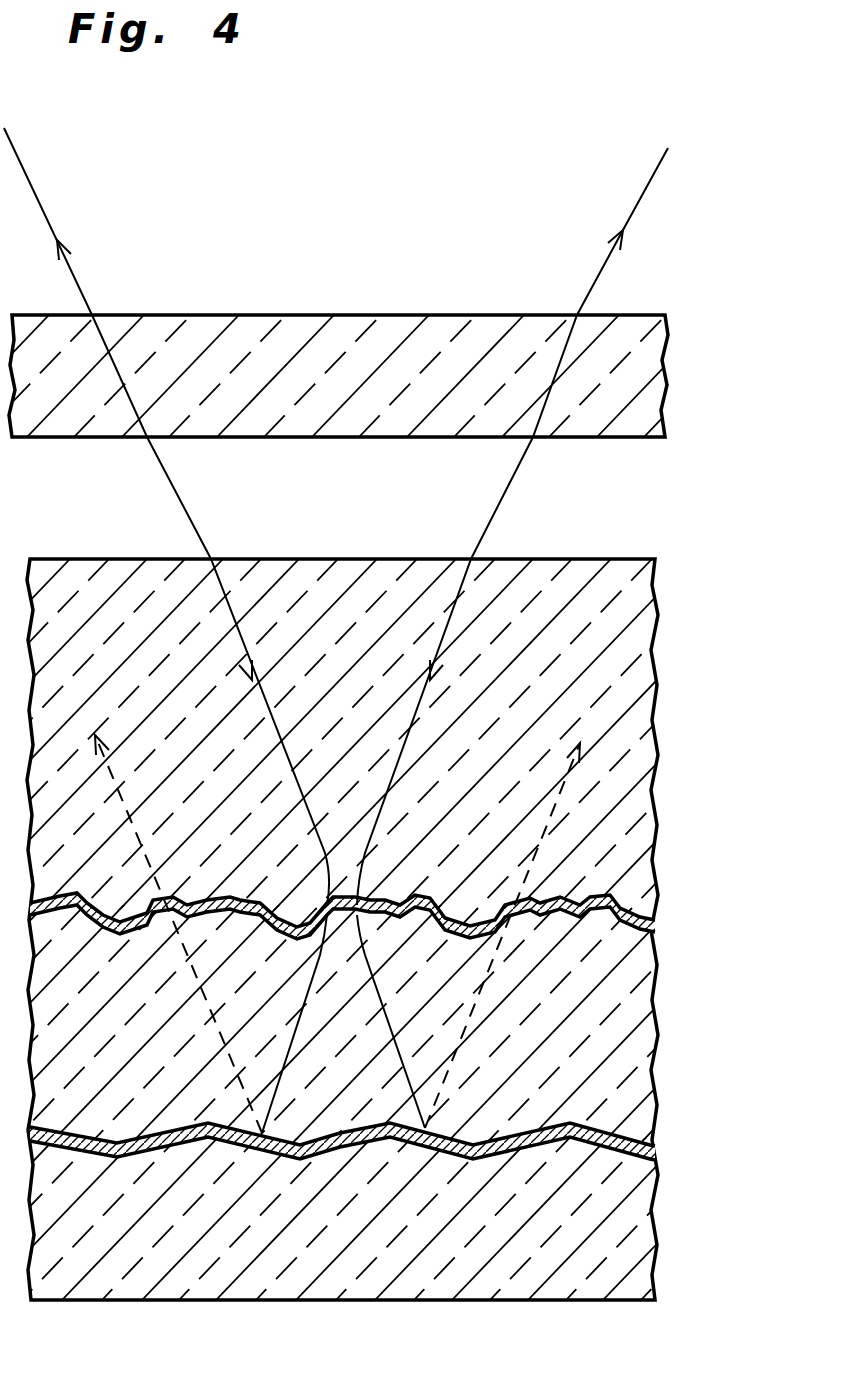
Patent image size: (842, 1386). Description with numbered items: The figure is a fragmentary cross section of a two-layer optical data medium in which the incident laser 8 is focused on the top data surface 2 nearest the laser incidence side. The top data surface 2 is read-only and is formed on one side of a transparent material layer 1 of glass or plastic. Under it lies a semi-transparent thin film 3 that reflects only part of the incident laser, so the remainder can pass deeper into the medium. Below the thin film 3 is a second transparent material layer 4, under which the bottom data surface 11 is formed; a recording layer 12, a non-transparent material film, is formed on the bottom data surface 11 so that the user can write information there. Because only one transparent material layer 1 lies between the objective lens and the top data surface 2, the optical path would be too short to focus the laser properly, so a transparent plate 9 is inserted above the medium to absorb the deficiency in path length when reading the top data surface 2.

The transparent material layer 1 is at (642, 725).
The data surface 2 is at (610, 902).
The semi-transparent thin film 3 is at (608, 925).
The transparent material layer 4 is at (612, 1027).
The incident laser 8 is at (506, 489).
The transparent plate 9 is at (636, 318).
The bottom data surface 11 is at (600, 1130).
The recording layer 12 is at (653, 1163).